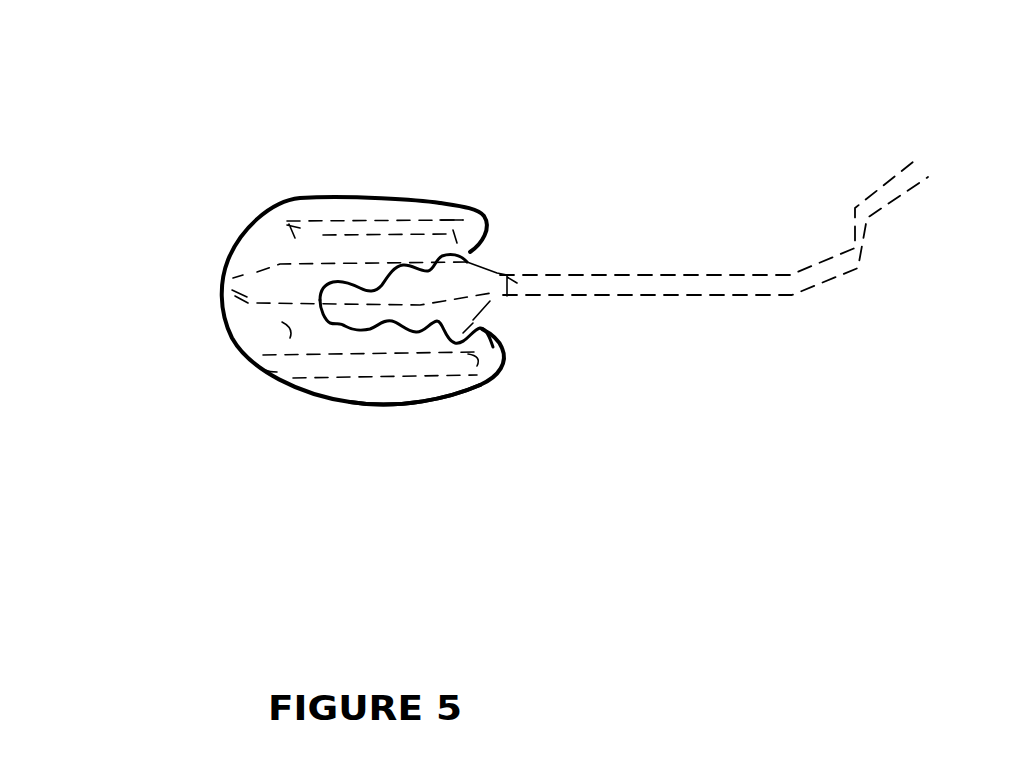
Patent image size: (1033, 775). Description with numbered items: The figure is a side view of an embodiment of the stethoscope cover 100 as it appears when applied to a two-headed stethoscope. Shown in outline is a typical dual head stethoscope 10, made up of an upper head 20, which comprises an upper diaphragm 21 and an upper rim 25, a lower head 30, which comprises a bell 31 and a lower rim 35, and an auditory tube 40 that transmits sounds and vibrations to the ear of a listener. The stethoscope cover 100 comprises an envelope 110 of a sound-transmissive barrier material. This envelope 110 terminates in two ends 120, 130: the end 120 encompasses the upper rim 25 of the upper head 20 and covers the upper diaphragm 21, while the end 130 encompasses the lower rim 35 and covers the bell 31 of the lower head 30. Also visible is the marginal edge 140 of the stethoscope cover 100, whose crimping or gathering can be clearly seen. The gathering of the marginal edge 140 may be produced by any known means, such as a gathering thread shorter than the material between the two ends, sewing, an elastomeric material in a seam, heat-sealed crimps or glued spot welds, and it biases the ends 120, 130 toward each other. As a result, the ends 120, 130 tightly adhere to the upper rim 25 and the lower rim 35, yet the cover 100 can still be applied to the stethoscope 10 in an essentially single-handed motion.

The stethoscope cover 100 is at (360, 181).
The dual head stethoscope 10 is at (337, 246).
The upper head 20 is at (269, 238).
The upper diaphragm 21 is at (403, 203).
The upper rim 25 is at (460, 216).
The lower head 30 is at (292, 347).
The bell 31 is at (360, 382).
The lower rim 35 is at (480, 380).
The auditory tube 40 is at (737, 257).
The envelope 110 is at (421, 424).
The end 120 is at (506, 234).
The end 130 is at (511, 345).
The marginal edge 140 is at (355, 342).